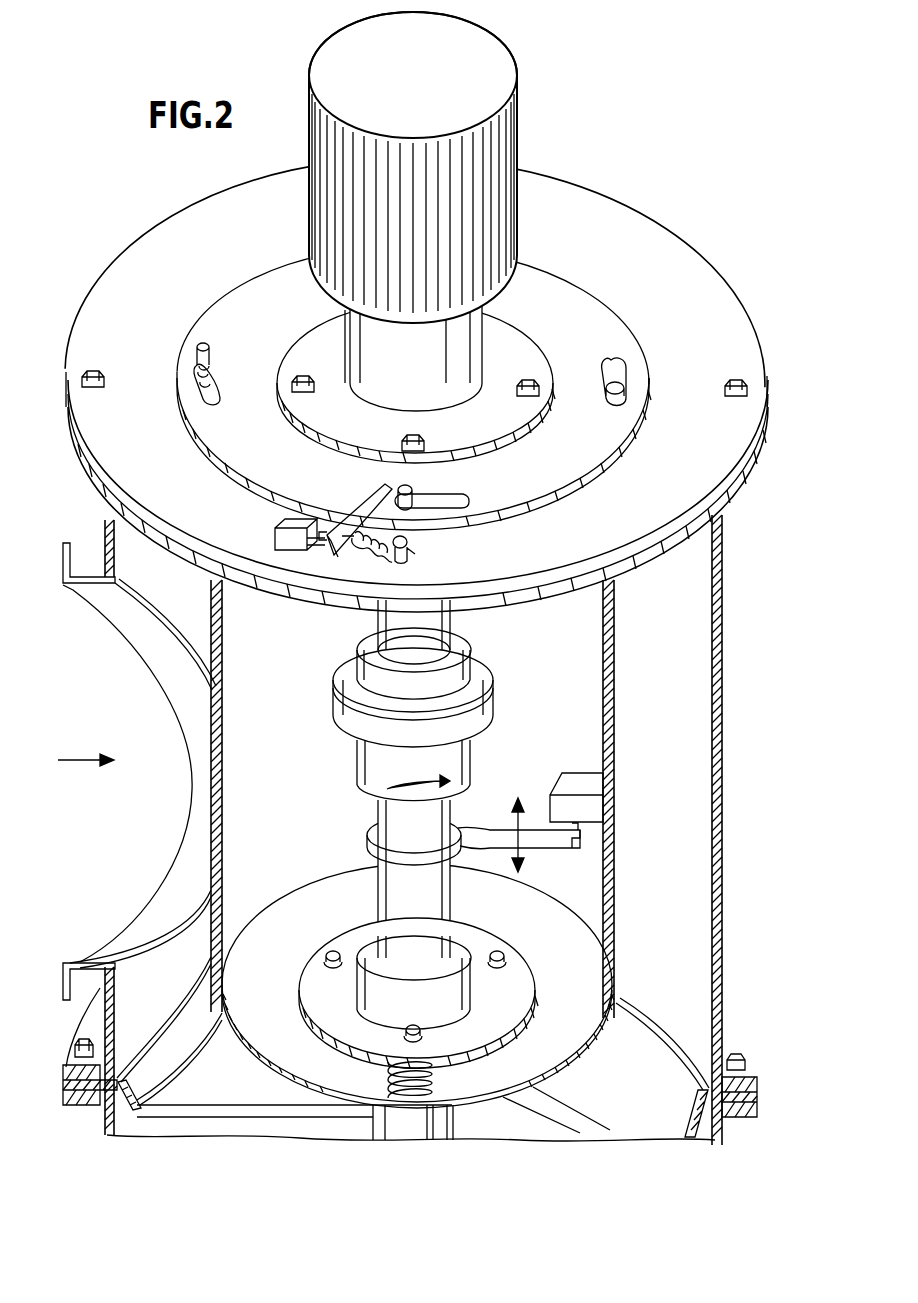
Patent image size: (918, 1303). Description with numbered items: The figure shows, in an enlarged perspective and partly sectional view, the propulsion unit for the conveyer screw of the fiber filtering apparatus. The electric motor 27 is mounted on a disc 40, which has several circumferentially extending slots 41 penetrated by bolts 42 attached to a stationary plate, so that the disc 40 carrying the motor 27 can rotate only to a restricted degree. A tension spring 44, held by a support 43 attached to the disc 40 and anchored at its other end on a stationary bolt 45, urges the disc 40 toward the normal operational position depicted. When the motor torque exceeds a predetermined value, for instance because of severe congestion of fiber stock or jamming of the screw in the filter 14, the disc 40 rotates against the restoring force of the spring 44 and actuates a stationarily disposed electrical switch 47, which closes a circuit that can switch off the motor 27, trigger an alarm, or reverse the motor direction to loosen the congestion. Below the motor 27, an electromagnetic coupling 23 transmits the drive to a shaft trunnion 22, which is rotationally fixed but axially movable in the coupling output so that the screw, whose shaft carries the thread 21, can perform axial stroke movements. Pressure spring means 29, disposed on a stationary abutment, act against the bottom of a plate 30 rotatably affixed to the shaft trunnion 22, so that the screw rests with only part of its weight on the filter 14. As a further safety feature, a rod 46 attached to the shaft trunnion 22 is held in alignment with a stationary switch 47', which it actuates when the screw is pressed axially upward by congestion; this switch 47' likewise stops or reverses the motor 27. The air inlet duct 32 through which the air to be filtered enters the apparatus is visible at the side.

The electric motor 27 is at (492, 160).
The disc 40 is at (590, 326).
The slots 41 is at (195, 378).
The bolts 42 is at (203, 345).
The electrical switch 47 is at (269, 519).
The support 43 is at (330, 541).
The tension spring 44 is at (366, 553).
The stationary bolt 45 is at (398, 559).
The electromagnetic coupling 23 is at (508, 664).
The stationary switch 47' is at (606, 786).
The rod 46 is at (582, 843).
The air inlet duct 32 is at (178, 892).
The shaft trunnion 22 is at (395, 900).
The plate 30 is at (508, 985).
The thread 21 is at (205, 1082).
The pressure spring means 29 is at (436, 1074).
The filter 14 is at (700, 1122).